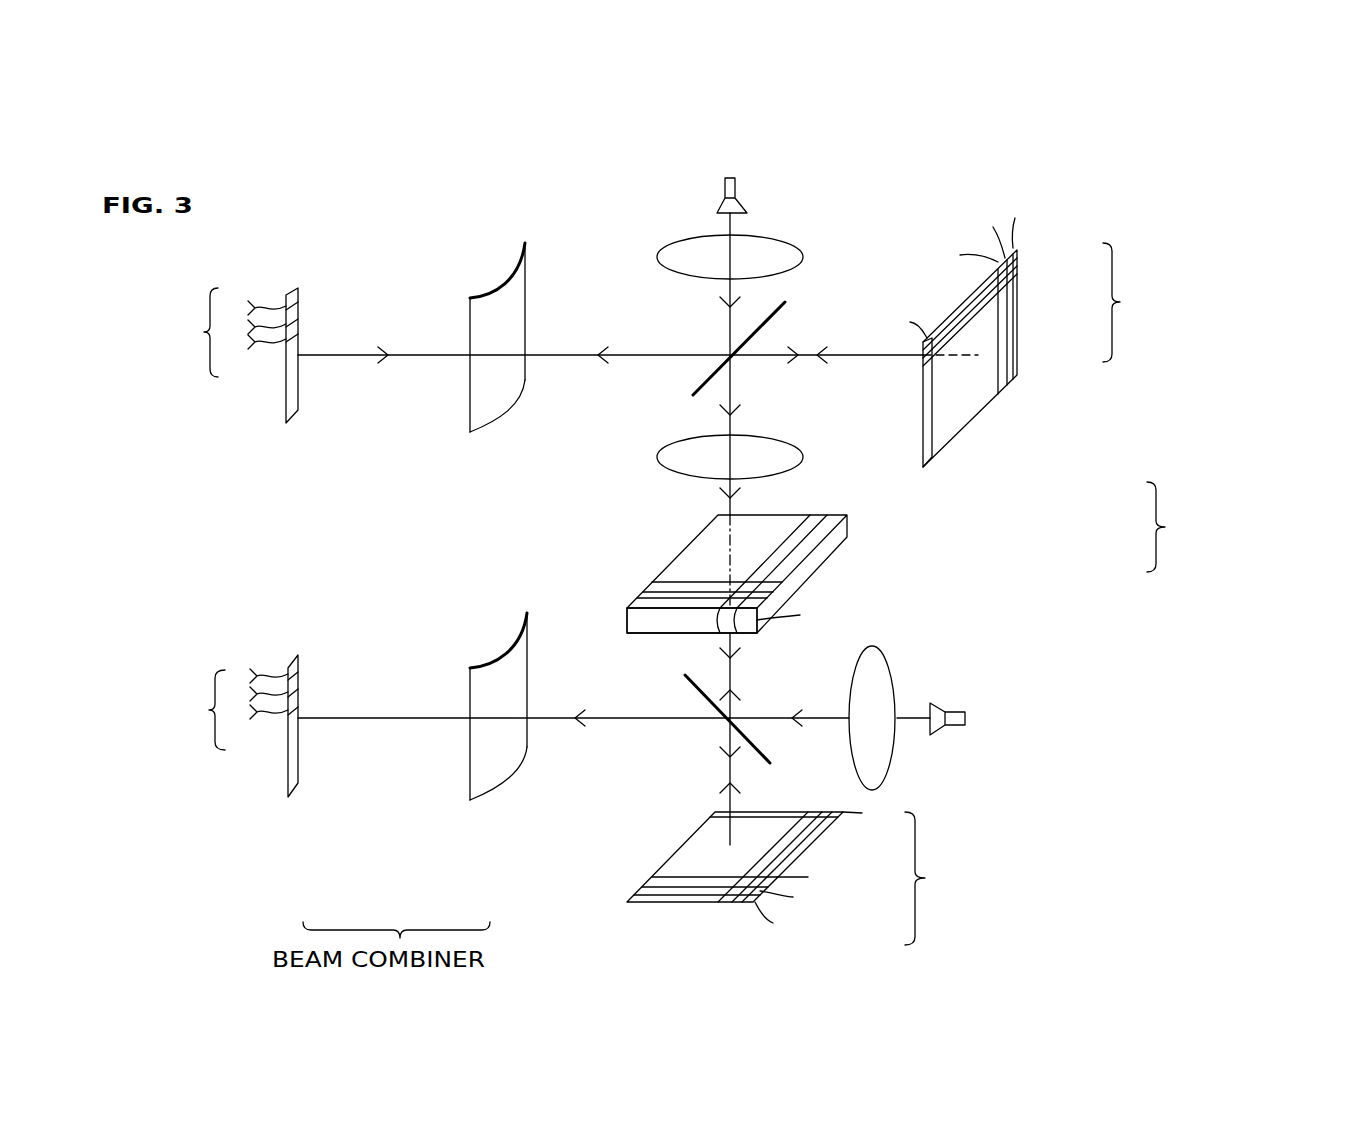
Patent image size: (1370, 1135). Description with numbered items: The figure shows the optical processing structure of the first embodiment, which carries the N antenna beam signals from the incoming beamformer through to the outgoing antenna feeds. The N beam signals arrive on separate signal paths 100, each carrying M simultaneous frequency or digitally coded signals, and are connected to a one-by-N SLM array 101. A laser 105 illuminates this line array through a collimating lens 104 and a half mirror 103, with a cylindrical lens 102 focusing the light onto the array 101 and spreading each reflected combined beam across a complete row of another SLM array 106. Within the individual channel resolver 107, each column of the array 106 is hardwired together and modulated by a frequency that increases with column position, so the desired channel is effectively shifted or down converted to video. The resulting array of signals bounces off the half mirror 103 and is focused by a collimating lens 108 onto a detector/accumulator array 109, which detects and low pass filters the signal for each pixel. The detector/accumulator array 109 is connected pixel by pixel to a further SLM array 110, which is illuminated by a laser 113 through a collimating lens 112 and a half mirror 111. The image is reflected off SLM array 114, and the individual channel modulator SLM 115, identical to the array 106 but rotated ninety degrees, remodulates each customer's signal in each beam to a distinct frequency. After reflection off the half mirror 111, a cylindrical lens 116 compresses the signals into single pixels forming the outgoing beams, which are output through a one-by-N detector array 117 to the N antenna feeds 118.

The signal paths 100 is at (168, 332).
The 1×N SLM array 101 is at (285, 396).
The cylindrical lens 102 is at (525, 248).
The half mirror 103 is at (718, 368).
The collimating lens 104 is at (822, 235).
The laser 105 is at (740, 203).
The SLM array 106 is at (975, 420).
The individual channel resolver 107 is at (1212, 302).
The collimating lens 108 is at (827, 432).
The detector/accumulator array 109 is at (810, 517).
The SLM array 110 is at (627, 620).
The half mirror 111 is at (707, 698).
The collimating lens 112 is at (892, 763).
The laser 113 is at (943, 705).
The SLM array 114 is at (627, 895).
The individual channel modulator SLM 115 is at (1023, 878).
The cylindrical lens 116 is at (472, 772).
The 1×N detector array 117 is at (288, 772).
The antenna feeds 118 is at (166, 704).